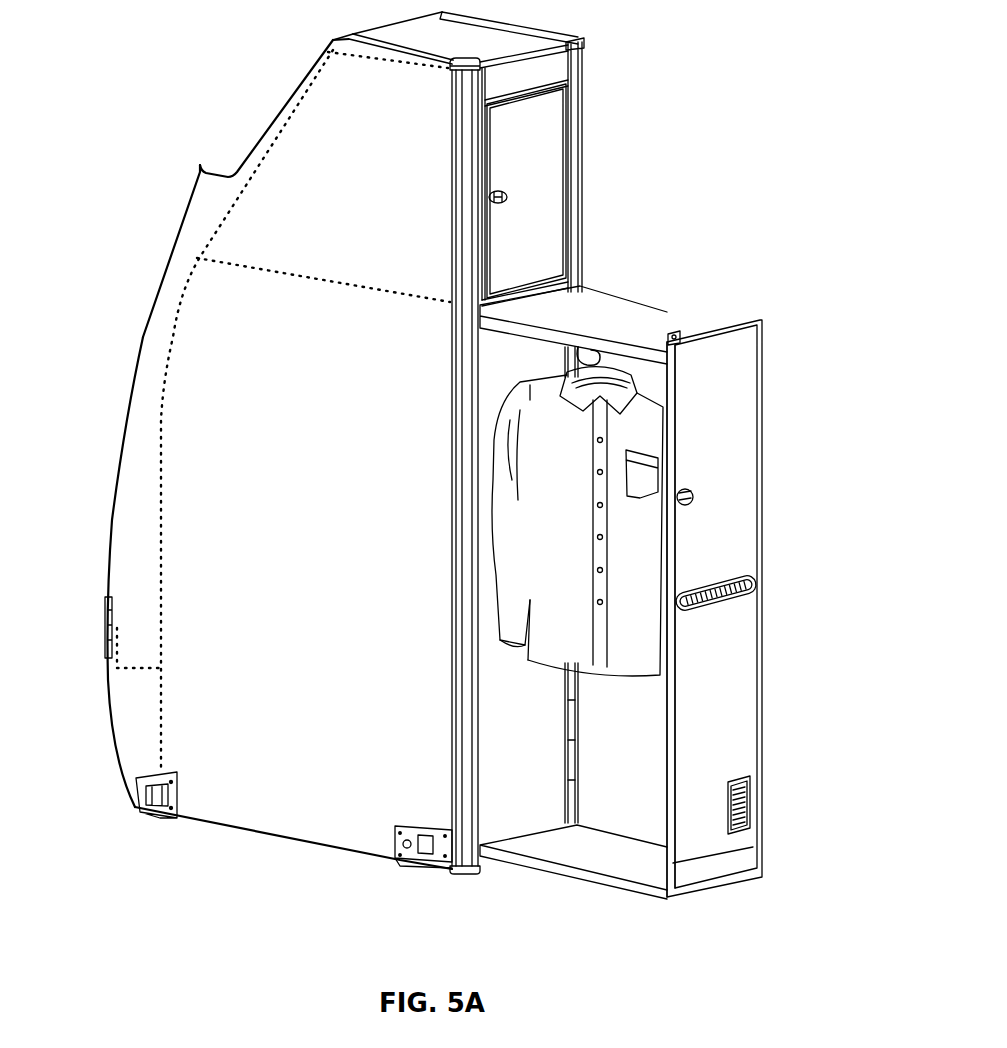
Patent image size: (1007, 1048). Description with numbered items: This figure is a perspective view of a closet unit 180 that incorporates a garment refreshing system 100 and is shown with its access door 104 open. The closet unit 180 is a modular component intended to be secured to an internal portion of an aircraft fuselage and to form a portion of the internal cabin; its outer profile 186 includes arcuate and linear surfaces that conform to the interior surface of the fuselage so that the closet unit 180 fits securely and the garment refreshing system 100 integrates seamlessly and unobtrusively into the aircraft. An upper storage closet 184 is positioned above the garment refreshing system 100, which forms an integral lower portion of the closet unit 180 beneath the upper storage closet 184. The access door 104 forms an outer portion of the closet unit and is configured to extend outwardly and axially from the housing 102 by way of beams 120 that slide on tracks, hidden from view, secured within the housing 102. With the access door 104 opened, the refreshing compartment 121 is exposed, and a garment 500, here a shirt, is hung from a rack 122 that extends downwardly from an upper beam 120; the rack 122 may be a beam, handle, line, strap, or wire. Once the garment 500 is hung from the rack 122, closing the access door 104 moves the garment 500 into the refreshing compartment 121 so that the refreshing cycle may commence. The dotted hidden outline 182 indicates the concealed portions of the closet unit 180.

The garment refreshing system 100 is at (593, 474).
The housing 102 is at (483, 763).
The access door 104 is at (740, 530).
The beams 120 is at (598, 312).
The refreshing compartment 121 is at (538, 762).
The rack 122 is at (615, 360).
The closet unit 180 is at (229, 47).
The hidden outline of enclosure 182 is at (275, 272).
The upper storage closet 184 is at (545, 165).
The outer profile 186 is at (130, 400).
The garment 500 is at (640, 432).